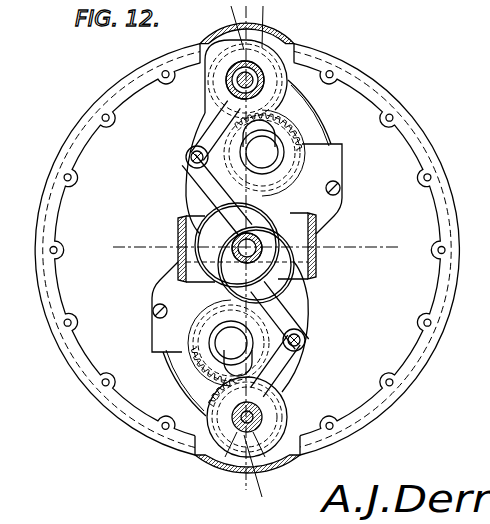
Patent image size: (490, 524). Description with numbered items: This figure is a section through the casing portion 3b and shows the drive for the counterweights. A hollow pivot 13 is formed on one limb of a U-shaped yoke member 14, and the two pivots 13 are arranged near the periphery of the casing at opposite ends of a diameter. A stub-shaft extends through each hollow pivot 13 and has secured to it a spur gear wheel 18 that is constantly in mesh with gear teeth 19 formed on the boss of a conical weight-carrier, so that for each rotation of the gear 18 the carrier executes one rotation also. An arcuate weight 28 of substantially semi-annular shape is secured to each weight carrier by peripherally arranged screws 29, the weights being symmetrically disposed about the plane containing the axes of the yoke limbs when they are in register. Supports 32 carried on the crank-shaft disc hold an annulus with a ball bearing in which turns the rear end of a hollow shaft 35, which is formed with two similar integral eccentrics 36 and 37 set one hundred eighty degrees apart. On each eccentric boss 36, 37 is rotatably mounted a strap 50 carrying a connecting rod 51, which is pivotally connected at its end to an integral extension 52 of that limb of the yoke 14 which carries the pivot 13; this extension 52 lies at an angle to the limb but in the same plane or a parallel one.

The housing cover rim 3b is at (398, 380).
The hollow pivot 13 is at (264, 68).
The U-shaped yoke member 14 is at (272, 120).
The spur gear wheel 18 is at (213, 382).
The gear teeth 19 is at (229, 360).
The arcuate weight 28 is at (335, 162).
The screws 29 is at (341, 192).
The supports 32 is at (311, 281).
The hollow shaft 35 is at (196, 243).
The eccentric 36 is at (317, 262).
The eccentric 37 is at (258, 209).
The strap 50 is at (290, 303).
The connecting rod 51 is at (305, 312).
The integral extension 52 is at (287, 375).